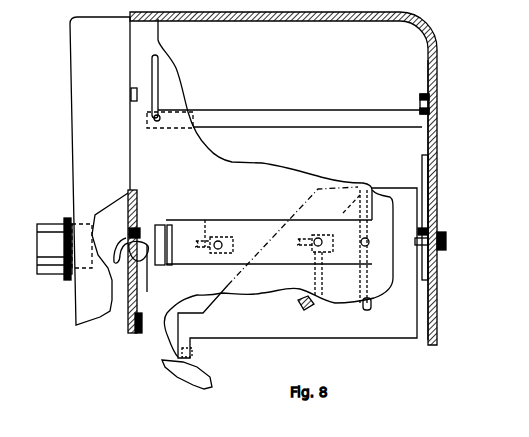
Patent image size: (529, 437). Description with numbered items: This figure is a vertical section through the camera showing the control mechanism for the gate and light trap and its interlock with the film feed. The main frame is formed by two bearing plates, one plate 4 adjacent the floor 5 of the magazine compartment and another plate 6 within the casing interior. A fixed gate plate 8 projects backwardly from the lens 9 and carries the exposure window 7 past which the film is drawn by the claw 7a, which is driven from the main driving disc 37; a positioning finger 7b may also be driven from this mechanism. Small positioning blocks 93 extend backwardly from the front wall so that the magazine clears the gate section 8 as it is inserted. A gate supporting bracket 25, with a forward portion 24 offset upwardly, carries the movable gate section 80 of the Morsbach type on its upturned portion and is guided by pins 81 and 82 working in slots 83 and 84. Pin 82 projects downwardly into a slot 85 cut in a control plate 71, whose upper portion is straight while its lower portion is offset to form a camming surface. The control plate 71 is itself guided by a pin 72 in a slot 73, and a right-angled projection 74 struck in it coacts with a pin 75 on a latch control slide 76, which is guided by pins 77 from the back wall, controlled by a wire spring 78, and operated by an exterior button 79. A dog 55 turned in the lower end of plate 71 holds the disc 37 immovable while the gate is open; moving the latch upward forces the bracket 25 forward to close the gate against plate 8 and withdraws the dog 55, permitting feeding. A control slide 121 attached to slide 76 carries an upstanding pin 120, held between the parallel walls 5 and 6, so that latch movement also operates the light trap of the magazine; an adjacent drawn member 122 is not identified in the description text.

The bearing plate 4 is at (102, 317).
The floor 5 is at (199, 171).
The bearing plate 6 is at (322, 150).
The exposure window 7 is at (148, 278).
The claw 7a is at (141, 252).
The positioning finger 7b is at (124, 232).
The fixed gate plate 8 is at (140, 230).
The lens 9 is at (64, 249).
The forward portion 24 is at (163, 222).
The gate supporting bracket 25 is at (269, 242).
The main driving disc 37 is at (190, 381).
The dog 55 is at (192, 352).
The control plate 71 is at (297, 273).
The pin 72 is at (361, 242).
The slot 73 is at (368, 310).
The right-angled projection 74 is at (418, 232).
The pin 75 is at (418, 244).
The latch control slide 76 is at (438, 207).
The guide pins 77 is at (420, 100).
The wire spring 78 is at (422, 158).
The button 79 is at (446, 241).
The movable gate section 80 is at (170, 265).
The pin 81 is at (218, 250).
The pin 82 is at (320, 247).
The slot 83 is at (207, 226).
The slot 84 is at (294, 236).
The slot 85 is at (298, 303).
The positioning blocks 93 is at (131, 97).
The pin 120 is at (160, 115).
The control slide 121 is at (290, 117).
The rod 122 is at (158, 67).